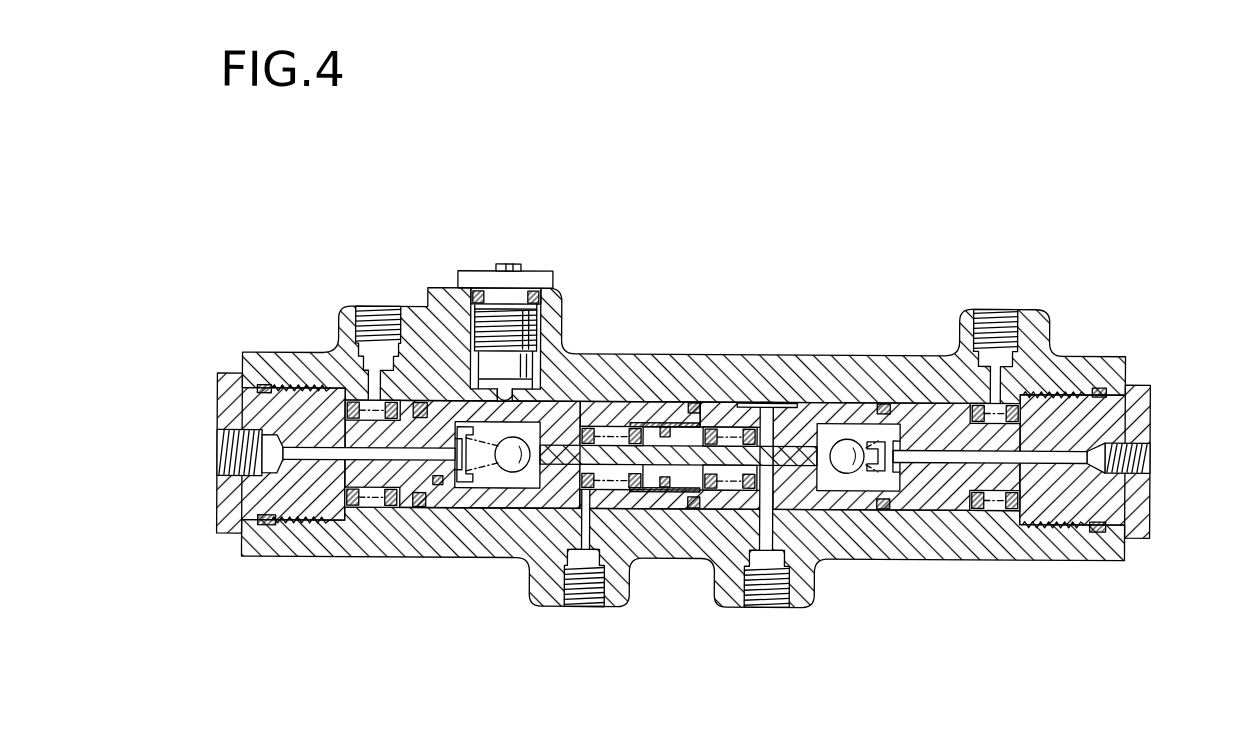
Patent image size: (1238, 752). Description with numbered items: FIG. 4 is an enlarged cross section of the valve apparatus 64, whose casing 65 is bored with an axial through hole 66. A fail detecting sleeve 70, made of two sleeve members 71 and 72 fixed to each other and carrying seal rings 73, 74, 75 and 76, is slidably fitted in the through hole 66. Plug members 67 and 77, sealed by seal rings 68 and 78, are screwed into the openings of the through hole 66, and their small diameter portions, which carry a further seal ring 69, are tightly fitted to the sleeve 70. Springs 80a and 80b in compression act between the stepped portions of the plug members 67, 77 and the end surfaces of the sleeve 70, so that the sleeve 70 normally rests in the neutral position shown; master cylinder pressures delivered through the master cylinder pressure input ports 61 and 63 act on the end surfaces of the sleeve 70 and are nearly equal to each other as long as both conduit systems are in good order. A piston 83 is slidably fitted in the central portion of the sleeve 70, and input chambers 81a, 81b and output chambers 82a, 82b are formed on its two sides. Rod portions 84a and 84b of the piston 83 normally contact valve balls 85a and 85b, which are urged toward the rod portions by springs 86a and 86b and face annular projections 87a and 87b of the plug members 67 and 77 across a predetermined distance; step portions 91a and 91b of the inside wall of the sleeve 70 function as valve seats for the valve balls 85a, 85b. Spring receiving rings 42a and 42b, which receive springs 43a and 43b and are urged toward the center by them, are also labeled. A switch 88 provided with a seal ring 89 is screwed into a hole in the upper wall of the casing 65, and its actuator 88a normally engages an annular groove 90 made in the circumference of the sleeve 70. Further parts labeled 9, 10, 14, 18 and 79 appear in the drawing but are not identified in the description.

The output rod end 9 is at (1138, 475).
The plug screw 10 is at (768, 590).
The plug screw 14 is at (595, 590).
The input rod connection 18 is at (235, 470).
The spring receiving ring 42a is at (738, 412).
The spring receiving ring 42b is at (649, 486).
The spring 43a is at (756, 478).
The spring 43b is at (627, 478).
The master cylinder pressure input port 61 is at (1008, 322).
The master cylinder pressure input port 63 is at (370, 316).
The valve apparatus 64 is at (775, 346).
The casing 65 is at (885, 358).
The axial through hole 66 is at (976, 500).
The plug member 67 is at (1128, 415).
The seal ring 68 is at (1098, 386).
The seal ring 69 is at (938, 499).
The fail detecting sleeve 70 is at (834, 511).
The sleeve member 71 is at (543, 385).
The sleeve member 72 is at (825, 413).
The seal ring 73 is at (403, 509).
The seal ring 74 is at (879, 489).
The seal ring 75 is at (660, 468).
The seal ring 76 is at (735, 486).
The plug member 77 is at (237, 411).
The seal ring 78 is at (265, 526).
The O-ring 79 is at (418, 511).
The spring 80a is at (988, 510).
The spring 80b is at (360, 510).
The input chamber 81a is at (889, 436).
The input chamber 81b is at (445, 398).
The output chamber 82a is at (742, 428).
The output chamber 82b is at (612, 422).
The piston 83 is at (678, 440).
The rod portion 84a is at (803, 512).
The rod portion 84b is at (560, 560).
The valve ball 85a is at (851, 443).
The valve ball 85b is at (497, 467).
The spring 86a is at (866, 497).
The spring 86b is at (460, 494).
The annular projection 87a is at (909, 477).
The annular projection 87b is at (456, 485).
The switch 88 is at (509, 268).
The actuator 88a is at (462, 398).
The seal ring 89 is at (480, 412).
The annular groove 90 is at (508, 506).
The step portion 91a is at (797, 418).
The step portion 91b is at (577, 404).